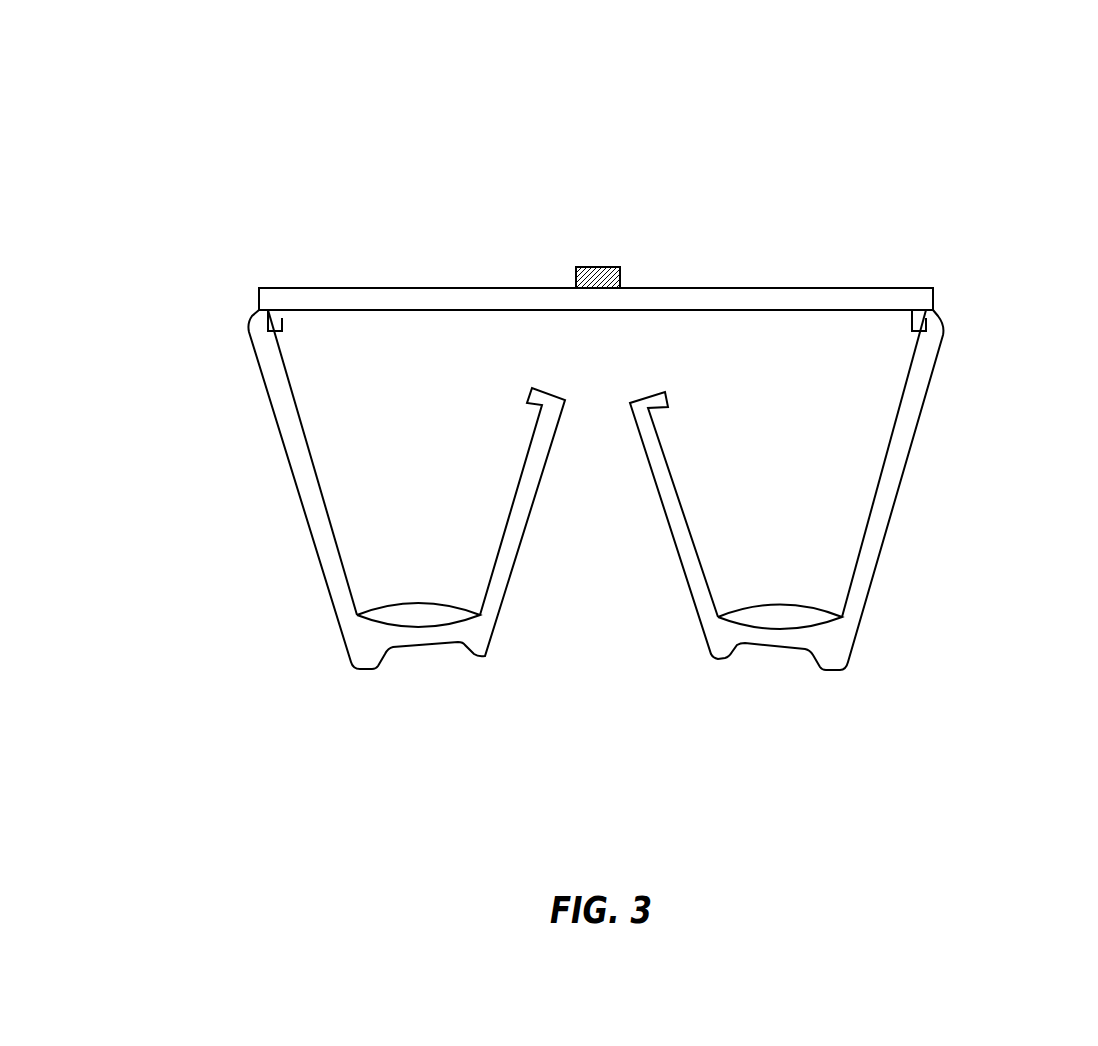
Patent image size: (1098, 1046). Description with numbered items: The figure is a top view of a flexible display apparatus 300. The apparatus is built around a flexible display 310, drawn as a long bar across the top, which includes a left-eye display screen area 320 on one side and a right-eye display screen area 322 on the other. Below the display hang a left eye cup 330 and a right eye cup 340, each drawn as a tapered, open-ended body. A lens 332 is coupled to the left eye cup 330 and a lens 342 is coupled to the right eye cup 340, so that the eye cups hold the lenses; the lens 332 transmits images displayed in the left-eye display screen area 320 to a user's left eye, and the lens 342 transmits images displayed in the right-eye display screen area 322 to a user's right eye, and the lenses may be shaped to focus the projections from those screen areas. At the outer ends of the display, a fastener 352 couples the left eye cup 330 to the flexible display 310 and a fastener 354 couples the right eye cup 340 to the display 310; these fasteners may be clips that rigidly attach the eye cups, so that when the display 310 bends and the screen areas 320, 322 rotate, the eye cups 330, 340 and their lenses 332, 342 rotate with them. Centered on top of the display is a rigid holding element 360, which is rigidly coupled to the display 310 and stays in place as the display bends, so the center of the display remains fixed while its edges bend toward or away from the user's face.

The flexible display apparatus 300 is at (203, 141).
The flexible display 310 is at (552, 300).
The left-eye display screen area 320 is at (423, 310).
The right-eye display screen area 322 is at (780, 310).
The rigid holding element 360 is at (593, 267).
The fastener 352 is at (279, 322).
The fastener 354 is at (920, 320).
The left eye cup 330 is at (477, 660).
The lens 332 is at (375, 612).
The right eye cup 340 is at (723, 658).
The lens 342 is at (732, 612).